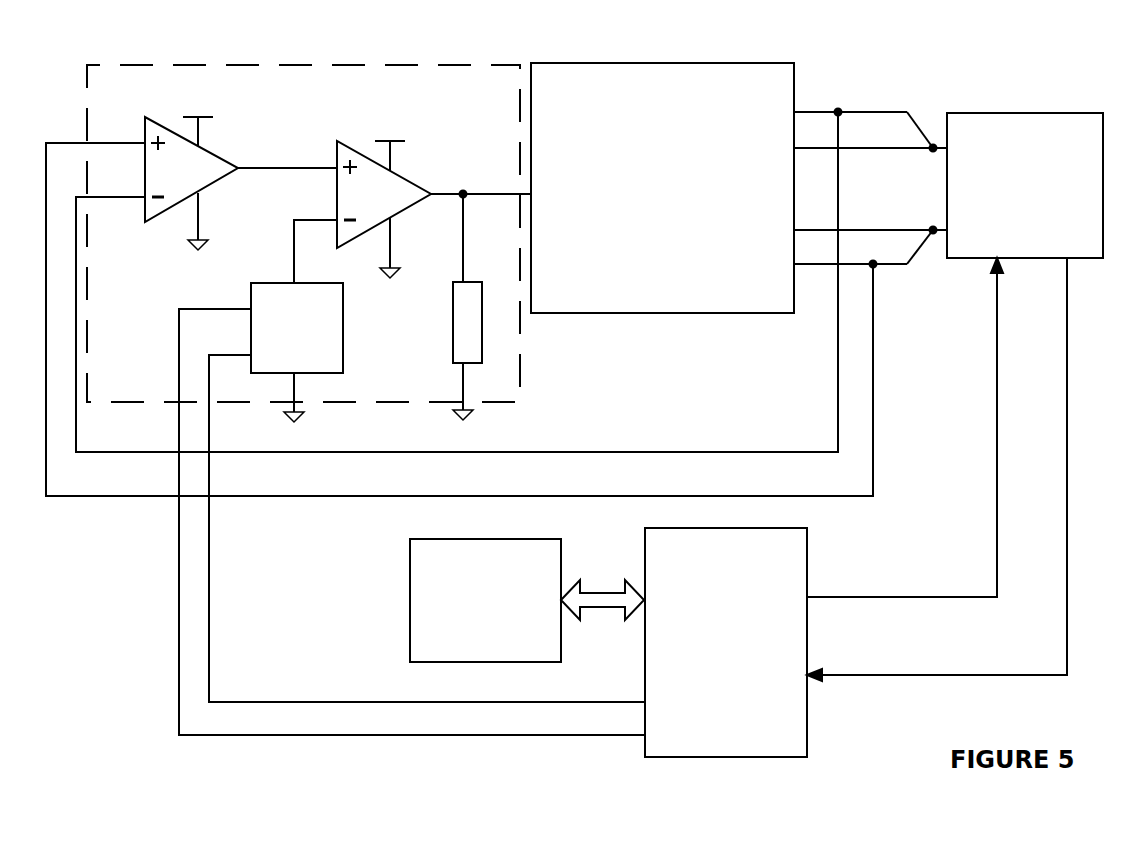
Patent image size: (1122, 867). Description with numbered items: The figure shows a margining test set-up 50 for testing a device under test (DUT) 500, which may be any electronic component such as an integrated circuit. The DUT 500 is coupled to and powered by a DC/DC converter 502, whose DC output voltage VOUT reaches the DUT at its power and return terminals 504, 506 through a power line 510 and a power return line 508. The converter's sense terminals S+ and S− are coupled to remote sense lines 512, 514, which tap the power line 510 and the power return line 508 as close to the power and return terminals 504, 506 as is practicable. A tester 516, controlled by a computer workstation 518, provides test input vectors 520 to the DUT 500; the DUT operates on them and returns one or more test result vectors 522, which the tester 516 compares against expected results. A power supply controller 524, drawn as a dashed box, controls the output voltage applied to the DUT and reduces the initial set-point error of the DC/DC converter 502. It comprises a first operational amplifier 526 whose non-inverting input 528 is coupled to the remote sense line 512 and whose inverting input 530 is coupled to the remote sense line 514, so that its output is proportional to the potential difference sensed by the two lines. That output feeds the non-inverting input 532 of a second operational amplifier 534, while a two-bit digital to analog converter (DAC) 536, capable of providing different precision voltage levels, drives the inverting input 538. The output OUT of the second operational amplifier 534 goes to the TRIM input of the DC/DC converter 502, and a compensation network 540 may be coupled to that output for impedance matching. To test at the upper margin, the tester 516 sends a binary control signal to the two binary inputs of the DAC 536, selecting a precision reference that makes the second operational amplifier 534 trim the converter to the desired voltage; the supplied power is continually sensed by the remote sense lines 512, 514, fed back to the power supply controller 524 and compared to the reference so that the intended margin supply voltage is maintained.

The margining test set-up 50 is at (100, 700).
The device under test (DUT) 500 is at (1002, 108).
The DC/DC converter 502 is at (660, 57).
The DUT power terminal 504 is at (936, 130).
The DUT return terminal 506 is at (941, 244).
The power return line 508 is at (853, 227).
The power line 510 is at (855, 153).
The remote sense line 512 is at (913, 268).
The remote sense line 514 is at (868, 108).
The tester 516 is at (638, 687).
The computer workstation 518 is at (407, 600).
The test input vectors 520 is at (992, 525).
The test result vectors 522 is at (1062, 518).
The power supply controller 524 is at (255, 60).
The first operational amplifier 526 is at (212, 147).
The non-inverting input 528 is at (133, 128).
The inverting input 530 is at (135, 210).
The non-inverting input 532 is at (323, 156).
The second operational amplifier 534 is at (405, 170).
The two-bit digital to analog converter (DAC) 536 is at (347, 337).
The inverting input 538 is at (328, 233).
The compensation network 540 is at (450, 348).